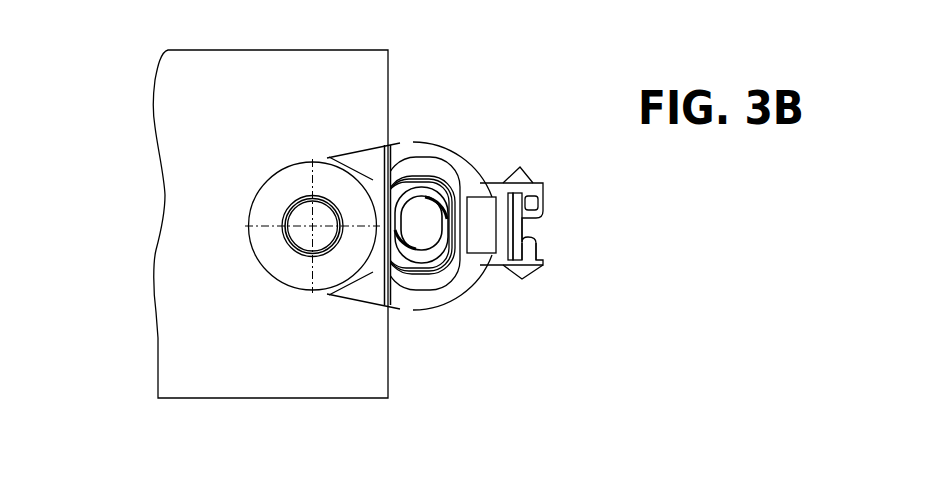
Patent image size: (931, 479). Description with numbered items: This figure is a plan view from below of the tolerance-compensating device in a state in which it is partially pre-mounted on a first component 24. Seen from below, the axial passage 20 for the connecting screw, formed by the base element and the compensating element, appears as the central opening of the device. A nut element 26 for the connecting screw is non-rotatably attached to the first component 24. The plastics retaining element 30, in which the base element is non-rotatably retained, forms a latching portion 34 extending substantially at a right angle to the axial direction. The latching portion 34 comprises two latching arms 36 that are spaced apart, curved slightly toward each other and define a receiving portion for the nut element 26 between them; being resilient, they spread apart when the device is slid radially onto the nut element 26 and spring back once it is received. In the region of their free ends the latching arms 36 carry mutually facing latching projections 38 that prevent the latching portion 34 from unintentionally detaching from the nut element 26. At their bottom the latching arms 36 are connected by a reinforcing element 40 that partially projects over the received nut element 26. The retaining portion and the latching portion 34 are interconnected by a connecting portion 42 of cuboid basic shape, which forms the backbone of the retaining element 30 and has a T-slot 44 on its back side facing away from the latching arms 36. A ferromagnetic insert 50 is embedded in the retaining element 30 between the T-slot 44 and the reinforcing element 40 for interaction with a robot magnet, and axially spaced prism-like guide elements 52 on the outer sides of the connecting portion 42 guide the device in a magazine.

The passage 20 is at (421, 223).
The first component 24 is at (158, 338).
The nut element 26 is at (253, 202).
The retaining element 30 is at (449, 149).
The latching portion 34 is at (463, 300).
The latching arms 36 is at (416, 157).
The latching projections 38 is at (369, 178).
The reinforcing element 40 is at (437, 255).
The connecting portion 42 is at (536, 257).
The T-slot 44 is at (522, 214).
The insert 50 is at (472, 196).
The guide elements 52 is at (520, 167).